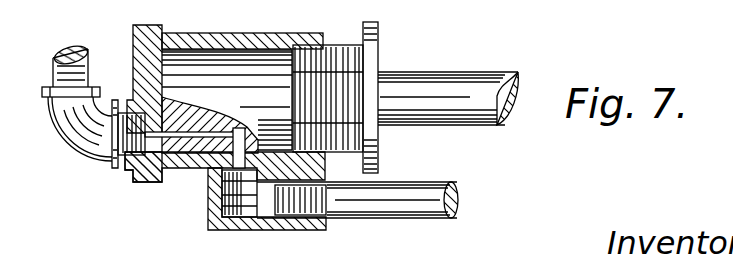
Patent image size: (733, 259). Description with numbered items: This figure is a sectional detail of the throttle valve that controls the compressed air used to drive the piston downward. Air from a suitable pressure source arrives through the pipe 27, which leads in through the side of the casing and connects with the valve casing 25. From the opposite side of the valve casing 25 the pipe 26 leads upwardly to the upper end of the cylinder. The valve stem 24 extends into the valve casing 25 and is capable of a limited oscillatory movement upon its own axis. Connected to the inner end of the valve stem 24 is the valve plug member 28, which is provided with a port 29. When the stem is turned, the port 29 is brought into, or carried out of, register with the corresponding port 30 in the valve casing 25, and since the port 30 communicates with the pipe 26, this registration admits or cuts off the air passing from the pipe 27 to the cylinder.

The valve stem 24 is at (422, 72).
The valve casing 25 is at (277, 24).
The pipe 26 is at (366, 28).
The pipe 27 is at (410, 220).
The valve plug member 28 is at (210, 72).
The port 29 is at (213, 170).
The port 30 is at (148, 183).